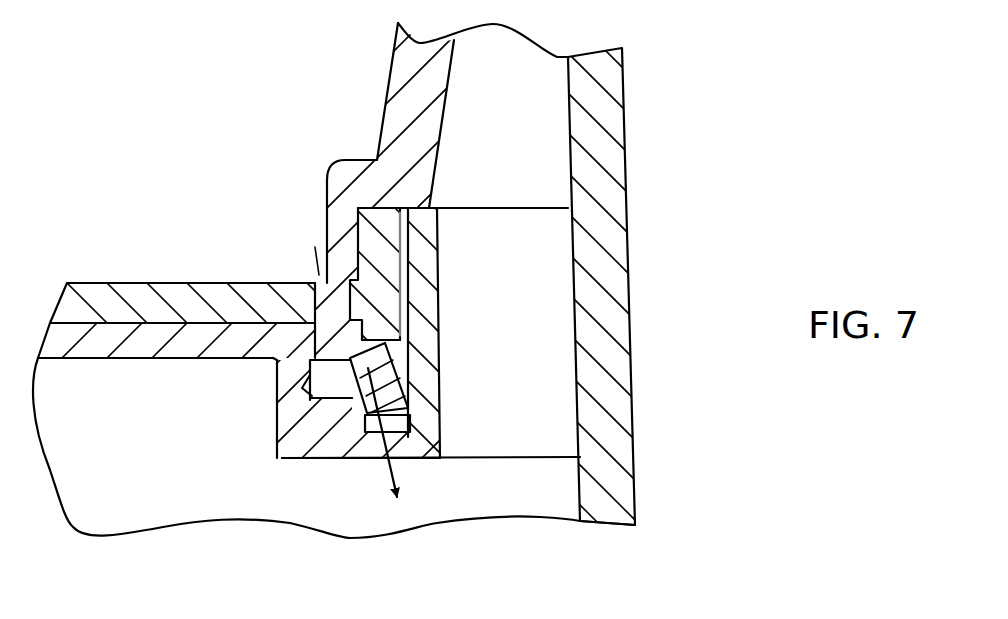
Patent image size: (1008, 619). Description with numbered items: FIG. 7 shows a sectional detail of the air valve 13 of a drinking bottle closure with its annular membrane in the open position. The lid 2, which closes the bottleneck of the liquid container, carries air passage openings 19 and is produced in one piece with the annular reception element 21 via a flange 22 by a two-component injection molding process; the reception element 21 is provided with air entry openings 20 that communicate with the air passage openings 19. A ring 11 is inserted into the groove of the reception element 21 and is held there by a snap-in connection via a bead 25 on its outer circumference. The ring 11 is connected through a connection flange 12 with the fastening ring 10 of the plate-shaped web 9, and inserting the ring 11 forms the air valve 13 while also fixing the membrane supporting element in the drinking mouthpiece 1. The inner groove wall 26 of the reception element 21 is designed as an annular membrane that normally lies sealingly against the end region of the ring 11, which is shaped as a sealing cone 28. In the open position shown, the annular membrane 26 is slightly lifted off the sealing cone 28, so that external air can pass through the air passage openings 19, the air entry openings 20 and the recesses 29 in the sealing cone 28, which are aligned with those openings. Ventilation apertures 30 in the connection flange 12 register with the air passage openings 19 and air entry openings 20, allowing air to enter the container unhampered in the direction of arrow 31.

The drinking mouthpiece 1 is at (367, 122).
The lid 2 is at (143, 308).
The plate-shaped web 9 is at (598, 187).
The fastening ring 10 is at (365, 205).
The ring 11 is at (322, 405).
The connection flange 12 is at (417, 444).
The air valve 13 is at (283, 265).
The air passage openings 19 is at (332, 298).
The air entry openings 20 is at (275, 362).
The reception element 21 is at (318, 412).
The flange 22 is at (100, 345).
The bead 25 is at (300, 398).
The inner groove wall 26 is at (390, 370).
The sealing cone 28 is at (400, 342).
The recesses 29 is at (326, 403).
The ventilation apertures 30 is at (380, 412).
The arrow 31 is at (318, 288).